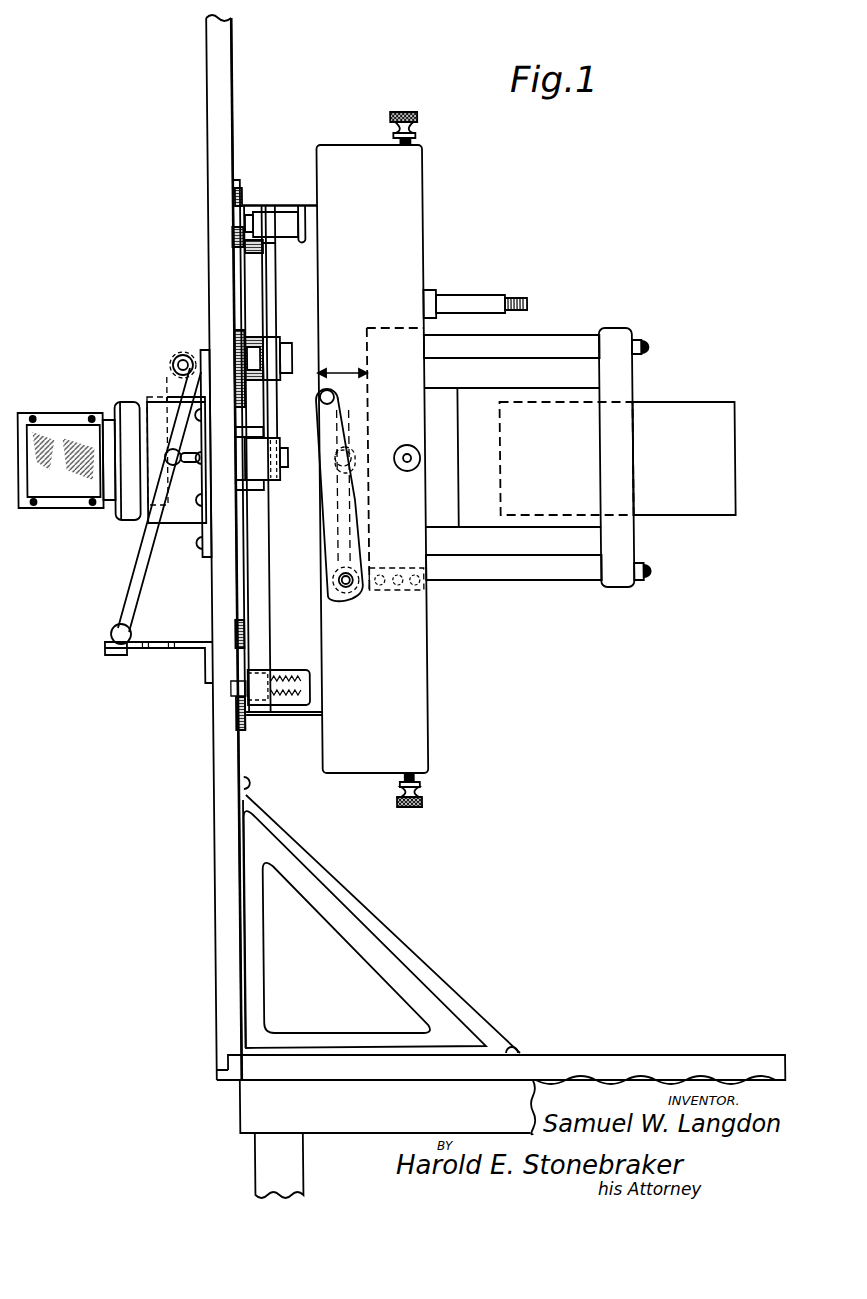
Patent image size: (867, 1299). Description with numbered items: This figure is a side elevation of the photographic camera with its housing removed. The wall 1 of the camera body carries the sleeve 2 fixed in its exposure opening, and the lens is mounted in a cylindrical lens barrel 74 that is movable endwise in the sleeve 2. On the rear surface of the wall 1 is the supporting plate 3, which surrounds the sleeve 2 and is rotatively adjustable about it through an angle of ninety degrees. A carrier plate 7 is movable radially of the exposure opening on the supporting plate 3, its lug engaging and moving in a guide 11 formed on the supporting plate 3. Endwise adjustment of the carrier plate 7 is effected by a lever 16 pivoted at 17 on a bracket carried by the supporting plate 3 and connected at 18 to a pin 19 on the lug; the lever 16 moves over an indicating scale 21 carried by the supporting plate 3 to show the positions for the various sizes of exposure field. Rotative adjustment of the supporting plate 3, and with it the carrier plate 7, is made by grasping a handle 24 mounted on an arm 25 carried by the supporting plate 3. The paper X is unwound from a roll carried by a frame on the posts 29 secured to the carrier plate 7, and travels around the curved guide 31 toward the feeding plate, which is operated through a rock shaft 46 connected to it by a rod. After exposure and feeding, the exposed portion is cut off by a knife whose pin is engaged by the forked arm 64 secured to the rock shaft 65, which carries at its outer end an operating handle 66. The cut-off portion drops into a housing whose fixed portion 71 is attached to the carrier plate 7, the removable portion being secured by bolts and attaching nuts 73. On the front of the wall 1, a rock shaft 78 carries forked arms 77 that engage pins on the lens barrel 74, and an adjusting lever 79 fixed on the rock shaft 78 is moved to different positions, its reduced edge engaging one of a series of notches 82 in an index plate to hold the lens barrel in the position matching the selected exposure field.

The wall 1 is at (216, 70).
The sleeve 2 is at (183, 518).
The supporting plate 3 is at (235, 276).
The carrier plate 7 is at (254, 620).
The guide 11 is at (248, 428).
The lever 16 is at (267, 289).
The pivot 17 is at (274, 350).
The connection 18 is at (271, 488).
The pin 19 is at (280, 453).
The indicating scale 21 is at (238, 222).
The handle 24 is at (296, 675).
The arm 25 is at (236, 653).
The posts 29 is at (547, 343).
The curved guide 31 is at (489, 396).
The rock shaft 46 is at (469, 300).
The forked arm 64 is at (350, 453).
The rock shaft 65 is at (339, 587).
The operating handle 66 is at (352, 542).
The fixed portion 71 is at (416, 698).
The attaching nuts 73 is at (416, 112).
The lens barrel 74 is at (148, 401).
The forked arms 77 is at (173, 470).
The rock shaft 78 is at (188, 356).
The adjusting lever 79 is at (127, 597).
The notches 82 is at (169, 643).
The paper X is at (684, 412).